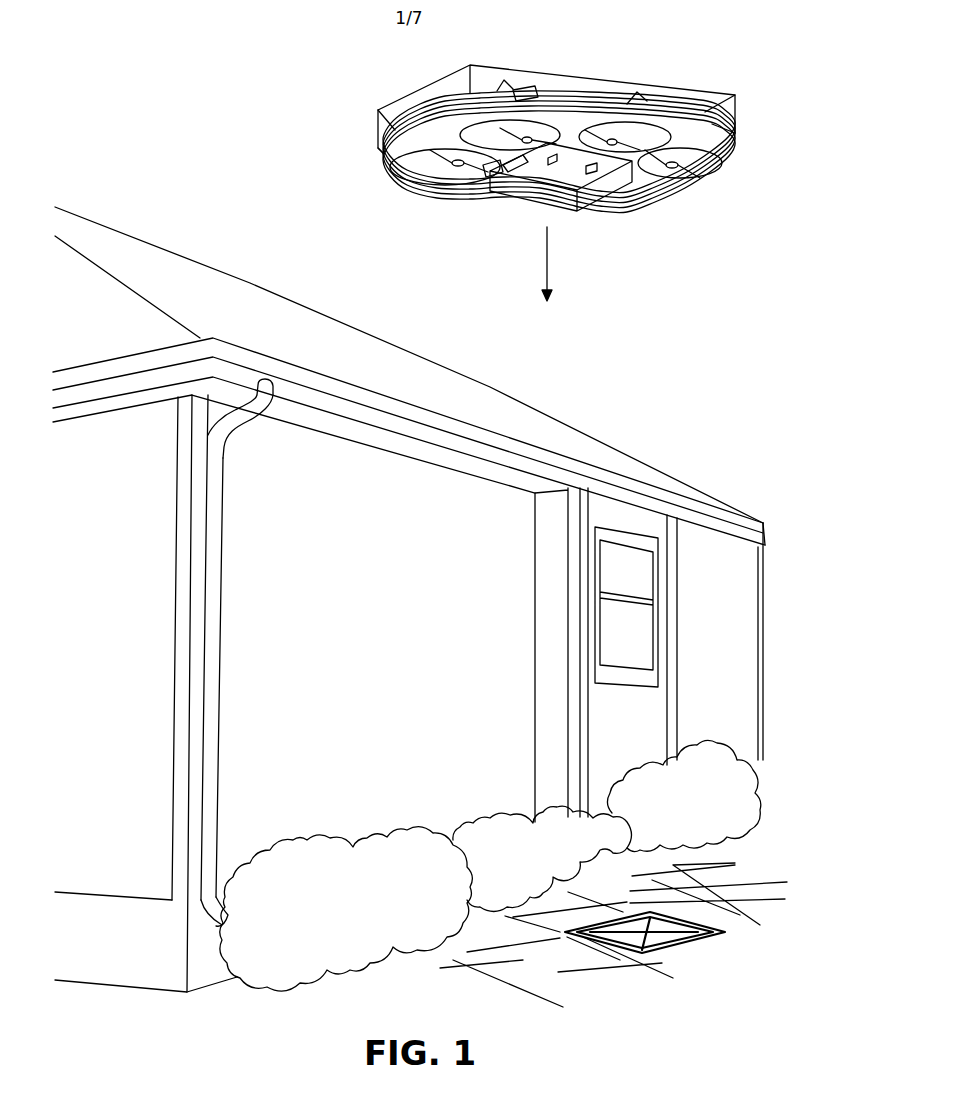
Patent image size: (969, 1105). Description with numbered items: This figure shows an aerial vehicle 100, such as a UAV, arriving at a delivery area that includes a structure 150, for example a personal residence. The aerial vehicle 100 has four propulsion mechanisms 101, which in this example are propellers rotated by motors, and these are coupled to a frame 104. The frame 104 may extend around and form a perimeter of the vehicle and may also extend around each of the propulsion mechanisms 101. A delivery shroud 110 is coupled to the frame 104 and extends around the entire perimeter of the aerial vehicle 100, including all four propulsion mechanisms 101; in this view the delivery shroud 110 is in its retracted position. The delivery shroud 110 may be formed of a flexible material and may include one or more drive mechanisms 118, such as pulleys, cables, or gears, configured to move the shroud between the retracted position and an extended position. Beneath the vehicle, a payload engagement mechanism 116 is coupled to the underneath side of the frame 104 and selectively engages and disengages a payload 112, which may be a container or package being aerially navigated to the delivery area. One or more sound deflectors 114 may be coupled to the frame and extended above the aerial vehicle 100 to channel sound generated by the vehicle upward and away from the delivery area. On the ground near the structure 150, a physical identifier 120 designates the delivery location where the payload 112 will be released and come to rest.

The aerial vehicle 100 is at (630, 36).
The propulsion mechanisms 101 is at (482, 108).
The frame 104 is at (380, 151).
The delivery shroud 110 is at (708, 173).
The payload 112 is at (575, 200).
The sound deflectors 114 is at (709, 97).
The payload engagement mechanism 116 is at (500, 205).
The drive mechanisms 118 is at (524, 97).
The physical identifier 120 is at (683, 943).
The structure 150 is at (208, 280).